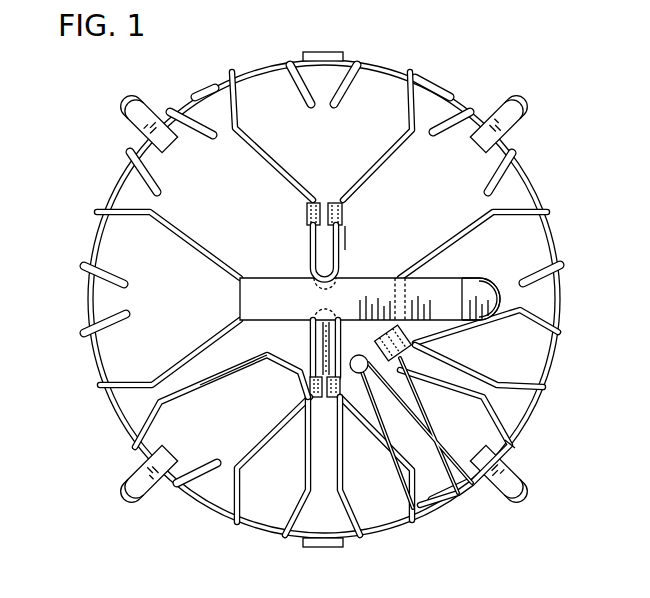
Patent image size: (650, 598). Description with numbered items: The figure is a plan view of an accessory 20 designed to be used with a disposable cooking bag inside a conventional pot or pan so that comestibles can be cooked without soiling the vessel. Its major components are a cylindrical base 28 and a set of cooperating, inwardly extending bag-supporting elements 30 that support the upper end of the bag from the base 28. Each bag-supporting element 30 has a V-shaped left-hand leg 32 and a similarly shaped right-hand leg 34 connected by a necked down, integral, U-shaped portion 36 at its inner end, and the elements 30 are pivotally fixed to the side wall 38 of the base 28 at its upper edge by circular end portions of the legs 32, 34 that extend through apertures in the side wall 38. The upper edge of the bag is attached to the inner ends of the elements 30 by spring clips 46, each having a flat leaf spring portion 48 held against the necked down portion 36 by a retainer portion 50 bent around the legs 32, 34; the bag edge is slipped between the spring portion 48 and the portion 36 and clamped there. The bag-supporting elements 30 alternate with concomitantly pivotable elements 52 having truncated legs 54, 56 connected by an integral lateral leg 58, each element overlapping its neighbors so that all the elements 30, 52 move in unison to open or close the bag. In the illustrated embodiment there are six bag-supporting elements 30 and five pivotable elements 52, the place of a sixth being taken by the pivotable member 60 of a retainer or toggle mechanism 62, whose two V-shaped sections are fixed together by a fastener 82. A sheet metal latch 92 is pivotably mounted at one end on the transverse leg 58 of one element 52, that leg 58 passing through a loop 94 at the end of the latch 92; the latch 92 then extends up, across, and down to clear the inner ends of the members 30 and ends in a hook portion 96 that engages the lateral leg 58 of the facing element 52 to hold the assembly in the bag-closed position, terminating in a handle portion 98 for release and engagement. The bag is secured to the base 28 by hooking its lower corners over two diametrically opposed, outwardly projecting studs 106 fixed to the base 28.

The accessory 20 is at (100, 183).
The cylindrical base 28 is at (537, 188).
The bag-supporting elements 30 is at (370, 171).
The left-hand leg 32 is at (413, 95).
The right-hand leg 34 is at (213, 90).
The U-shaped portion 36 is at (307, 248).
The side wall 38 is at (562, 314).
The spring clips 46 is at (349, 222).
The leaf spring portion 48 is at (348, 252).
The retainer portion 50 is at (305, 213).
The pivotable elements 52 is at (505, 430).
The truncated leg 54 is at (207, 383).
The truncated leg 56 is at (288, 522).
The lateral leg 58 is at (253, 347).
The pivotable member 60 is at (512, 441).
The toggle mechanism 62 is at (358, 347).
The fastener 82 is at (360, 375).
The latch 92 is at (276, 277).
The loop 94 is at (243, 305).
The hook portion 96 is at (420, 297).
The handle portion 98 is at (486, 276).
The studs 106 is at (332, 52).